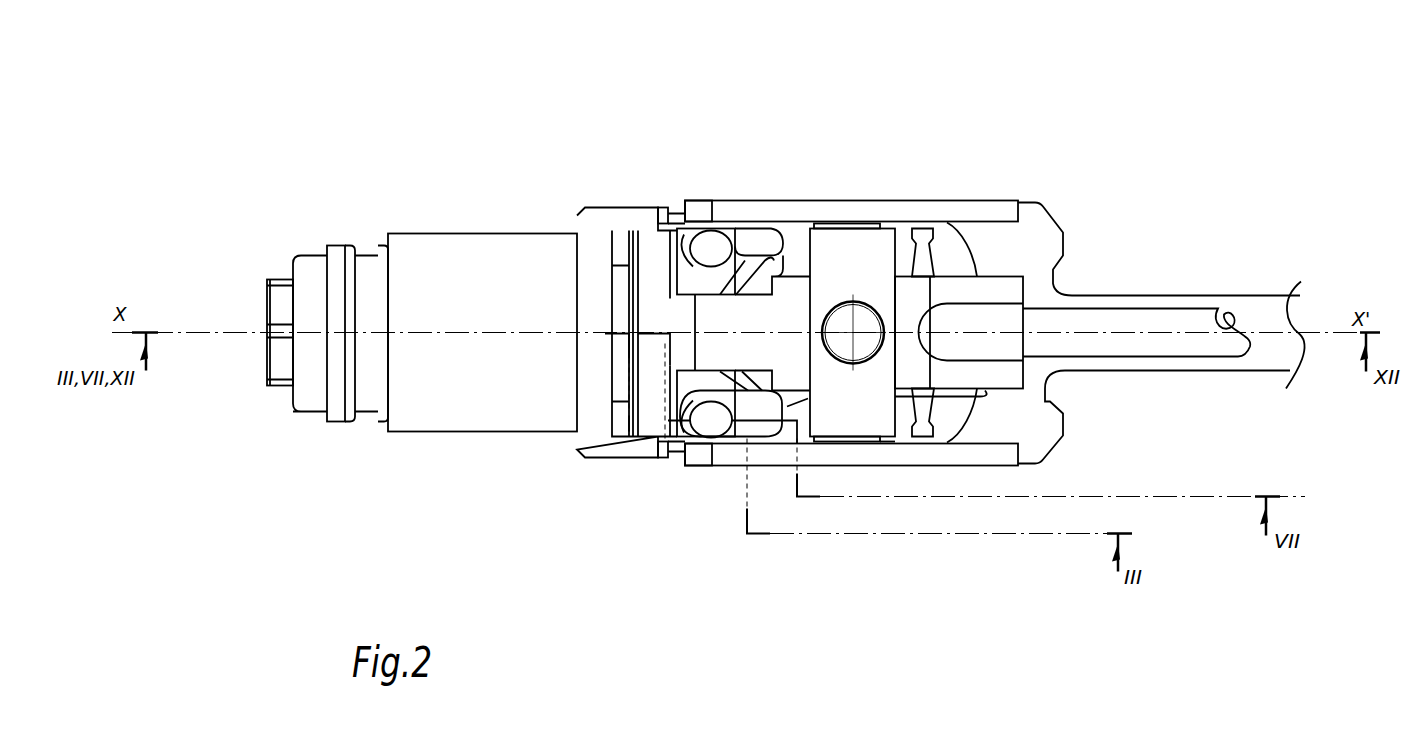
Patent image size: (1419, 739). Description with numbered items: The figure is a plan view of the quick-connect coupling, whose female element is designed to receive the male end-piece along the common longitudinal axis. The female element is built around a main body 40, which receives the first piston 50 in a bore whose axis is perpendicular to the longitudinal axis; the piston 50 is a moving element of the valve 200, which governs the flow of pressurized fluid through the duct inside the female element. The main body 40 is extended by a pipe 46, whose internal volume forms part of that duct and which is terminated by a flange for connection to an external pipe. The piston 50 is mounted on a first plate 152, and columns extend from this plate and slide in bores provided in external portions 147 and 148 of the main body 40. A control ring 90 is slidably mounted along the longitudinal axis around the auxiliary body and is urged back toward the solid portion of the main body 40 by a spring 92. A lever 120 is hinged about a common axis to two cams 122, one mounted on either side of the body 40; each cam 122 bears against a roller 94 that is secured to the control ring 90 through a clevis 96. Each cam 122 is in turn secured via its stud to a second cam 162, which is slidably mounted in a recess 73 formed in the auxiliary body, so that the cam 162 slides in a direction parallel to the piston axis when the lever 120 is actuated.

The main body 40 is at (923, 293).
The pipe 46 is at (1092, 323).
The first piston 50 is at (863, 348).
The recess 73 is at (707, 268).
The control ring 90 is at (432, 424).
The spring 92 is at (352, 245).
The roller 94 is at (663, 208).
The clevis 96 is at (590, 383).
The lever 120 is at (1037, 445).
The cam 122 is at (690, 226).
The external portion of the main body 147 is at (837, 455).
The external portion of the main body 148 is at (853, 226).
The first plate 152 is at (862, 255).
The second cam 162 is at (727, 225).
The valve 200 is at (884, 448).